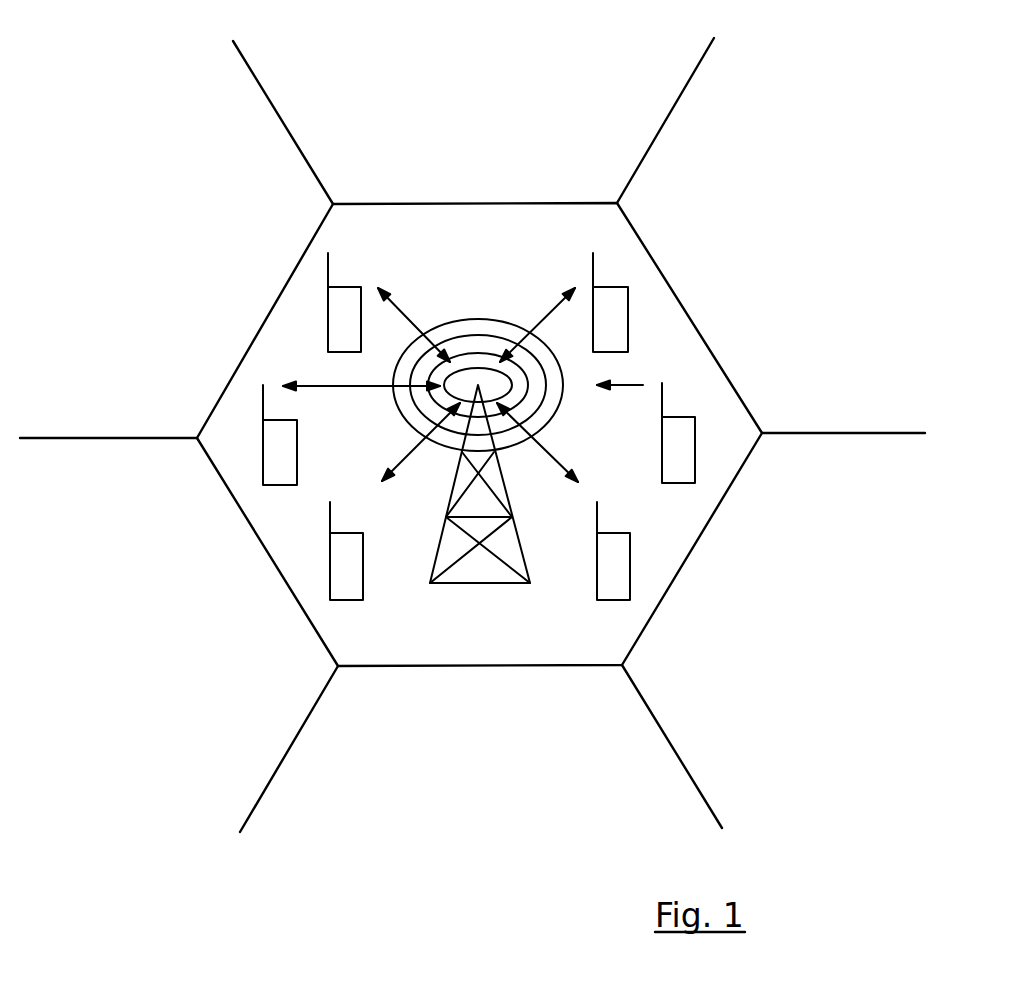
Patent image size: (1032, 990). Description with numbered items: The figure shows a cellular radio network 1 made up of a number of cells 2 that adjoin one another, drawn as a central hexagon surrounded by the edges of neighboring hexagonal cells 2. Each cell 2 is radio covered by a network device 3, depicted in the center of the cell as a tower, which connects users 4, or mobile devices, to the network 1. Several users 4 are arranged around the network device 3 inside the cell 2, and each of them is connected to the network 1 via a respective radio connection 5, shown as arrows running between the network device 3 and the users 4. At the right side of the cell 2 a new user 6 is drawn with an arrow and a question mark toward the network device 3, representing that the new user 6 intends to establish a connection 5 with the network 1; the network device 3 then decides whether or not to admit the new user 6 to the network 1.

The cellular radio network 1 is at (841, 122).
The cell 2 is at (472, 435).
The network device 3 is at (520, 535).
The user 4 is at (345, 288).
The radio connection 5 is at (410, 317).
The new user 6 is at (695, 462).